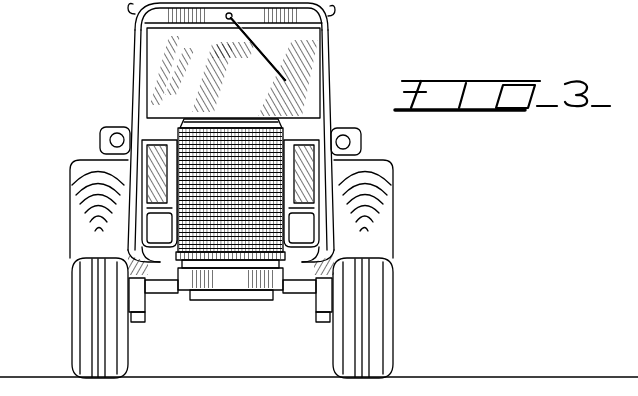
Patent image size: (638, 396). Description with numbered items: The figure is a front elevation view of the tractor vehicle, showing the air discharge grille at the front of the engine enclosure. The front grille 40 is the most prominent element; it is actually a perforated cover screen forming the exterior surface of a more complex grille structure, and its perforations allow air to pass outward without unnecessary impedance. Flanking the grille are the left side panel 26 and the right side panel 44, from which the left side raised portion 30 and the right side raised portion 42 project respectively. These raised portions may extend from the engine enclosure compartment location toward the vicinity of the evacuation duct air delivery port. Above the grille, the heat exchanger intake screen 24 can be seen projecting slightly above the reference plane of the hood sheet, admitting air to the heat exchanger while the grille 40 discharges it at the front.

The heat exchanger intake screen 24 is at (230, 119).
The left side panel 26 is at (300, 128).
The left side raised portion 30 is at (295, 192).
The front grille 40 is at (263, 167).
The right side raised portion 42 is at (170, 187).
The right side panel 44 is at (140, 130).